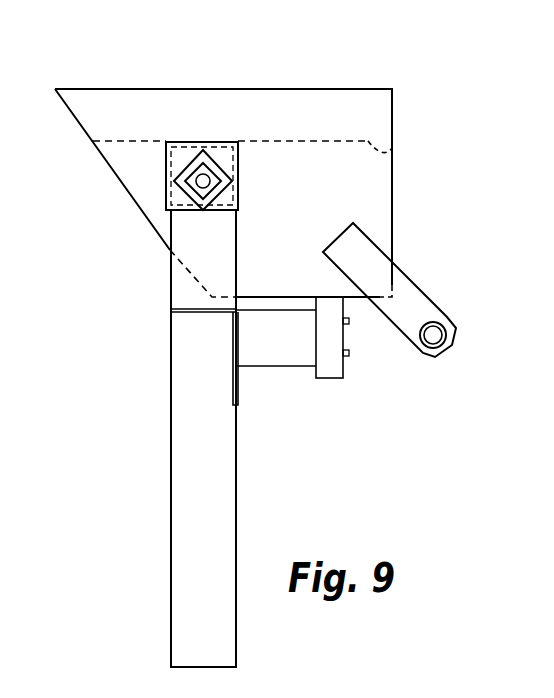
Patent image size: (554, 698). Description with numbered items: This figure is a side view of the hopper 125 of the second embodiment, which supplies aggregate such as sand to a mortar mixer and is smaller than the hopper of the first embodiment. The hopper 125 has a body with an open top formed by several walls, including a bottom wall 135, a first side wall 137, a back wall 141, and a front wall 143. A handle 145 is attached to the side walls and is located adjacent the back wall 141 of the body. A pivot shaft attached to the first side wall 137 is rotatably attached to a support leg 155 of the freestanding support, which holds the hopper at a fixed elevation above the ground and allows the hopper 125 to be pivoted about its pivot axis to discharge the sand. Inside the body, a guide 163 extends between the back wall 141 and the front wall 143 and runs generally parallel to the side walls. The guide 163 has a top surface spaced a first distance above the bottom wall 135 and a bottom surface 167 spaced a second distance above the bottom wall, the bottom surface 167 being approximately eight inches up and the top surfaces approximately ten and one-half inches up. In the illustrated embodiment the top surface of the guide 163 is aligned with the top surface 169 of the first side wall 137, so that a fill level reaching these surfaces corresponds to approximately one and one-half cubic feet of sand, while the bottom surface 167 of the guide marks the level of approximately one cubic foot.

The hopper 125 is at (353, 97).
The bottom wall 135 is at (268, 297).
The first side wall 137 is at (355, 206).
The back wall 141 is at (393, 173).
The front wall 143 is at (112, 172).
The handle 145 is at (453, 348).
The support leg 155 is at (221, 489).
The guide 163 is at (127, 115).
The bottom surface 167 is at (392, 148).
The top surface 169 is at (253, 89).